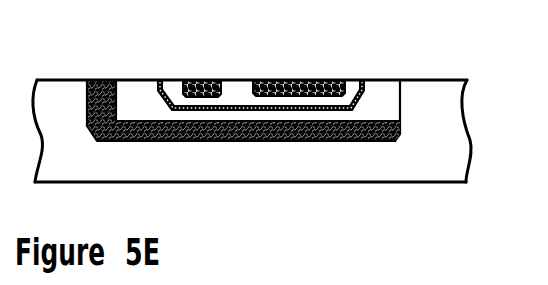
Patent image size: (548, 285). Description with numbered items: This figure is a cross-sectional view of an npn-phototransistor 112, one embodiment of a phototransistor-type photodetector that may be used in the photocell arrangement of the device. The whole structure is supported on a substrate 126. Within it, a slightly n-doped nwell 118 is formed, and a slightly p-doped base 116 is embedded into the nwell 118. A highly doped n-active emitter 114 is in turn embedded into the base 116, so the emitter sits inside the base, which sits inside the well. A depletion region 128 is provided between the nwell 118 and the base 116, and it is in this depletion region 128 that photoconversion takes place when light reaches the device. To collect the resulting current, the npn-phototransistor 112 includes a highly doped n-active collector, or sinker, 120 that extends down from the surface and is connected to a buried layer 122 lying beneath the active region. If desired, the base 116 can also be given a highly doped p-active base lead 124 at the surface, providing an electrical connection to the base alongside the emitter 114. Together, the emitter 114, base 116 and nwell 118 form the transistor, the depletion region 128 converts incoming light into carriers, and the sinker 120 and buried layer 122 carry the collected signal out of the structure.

The npn-phototransistor 112 is at (467, 123).
The n-active emitter 114 is at (309, 80).
The base 116 is at (173, 88).
The nwell 118 is at (386, 99).
The n-active collector (sinker) 120 is at (102, 79).
The buried layer 122 is at (263, 145).
The p-active base lead 124 is at (213, 80).
The substrate 126 is at (381, 155).
The depletion region 128 is at (160, 78).